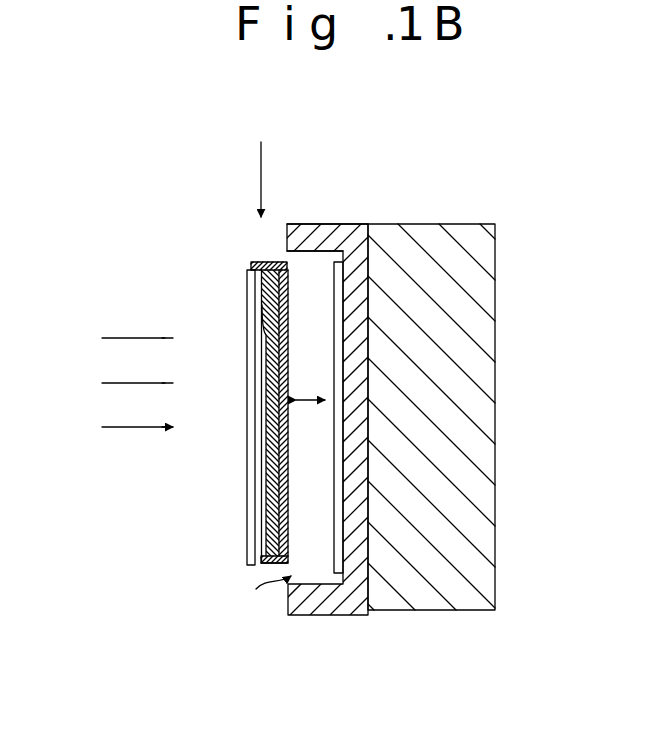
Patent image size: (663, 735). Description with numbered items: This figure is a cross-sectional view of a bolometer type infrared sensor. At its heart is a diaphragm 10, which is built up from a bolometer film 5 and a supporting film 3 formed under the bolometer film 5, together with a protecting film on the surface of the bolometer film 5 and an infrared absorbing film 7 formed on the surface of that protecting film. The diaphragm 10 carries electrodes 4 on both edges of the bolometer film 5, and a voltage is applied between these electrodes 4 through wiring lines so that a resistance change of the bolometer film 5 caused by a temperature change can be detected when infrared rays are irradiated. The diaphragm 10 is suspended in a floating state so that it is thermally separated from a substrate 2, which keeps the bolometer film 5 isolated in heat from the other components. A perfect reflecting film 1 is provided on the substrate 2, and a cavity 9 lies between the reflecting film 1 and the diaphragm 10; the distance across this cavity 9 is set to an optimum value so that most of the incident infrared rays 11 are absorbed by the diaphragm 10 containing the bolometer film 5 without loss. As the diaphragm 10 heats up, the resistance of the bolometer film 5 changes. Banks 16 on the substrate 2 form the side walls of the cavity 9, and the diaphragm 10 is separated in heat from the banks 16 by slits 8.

The reflecting film 1 is at (348, 250).
The substrate 2 is at (432, 602).
The supporting film 3 is at (278, 262).
The electrode 4 is at (258, 262).
The bolometer film 5 is at (268, 348).
The infrared absorbing film 7 is at (254, 517).
The slit 8 is at (263, 589).
The cavity 9 is at (310, 383).
The diaphragm 10 is at (275, 139).
The incident infrared rays 11 is at (112, 382).
The bank 16 is at (330, 224).